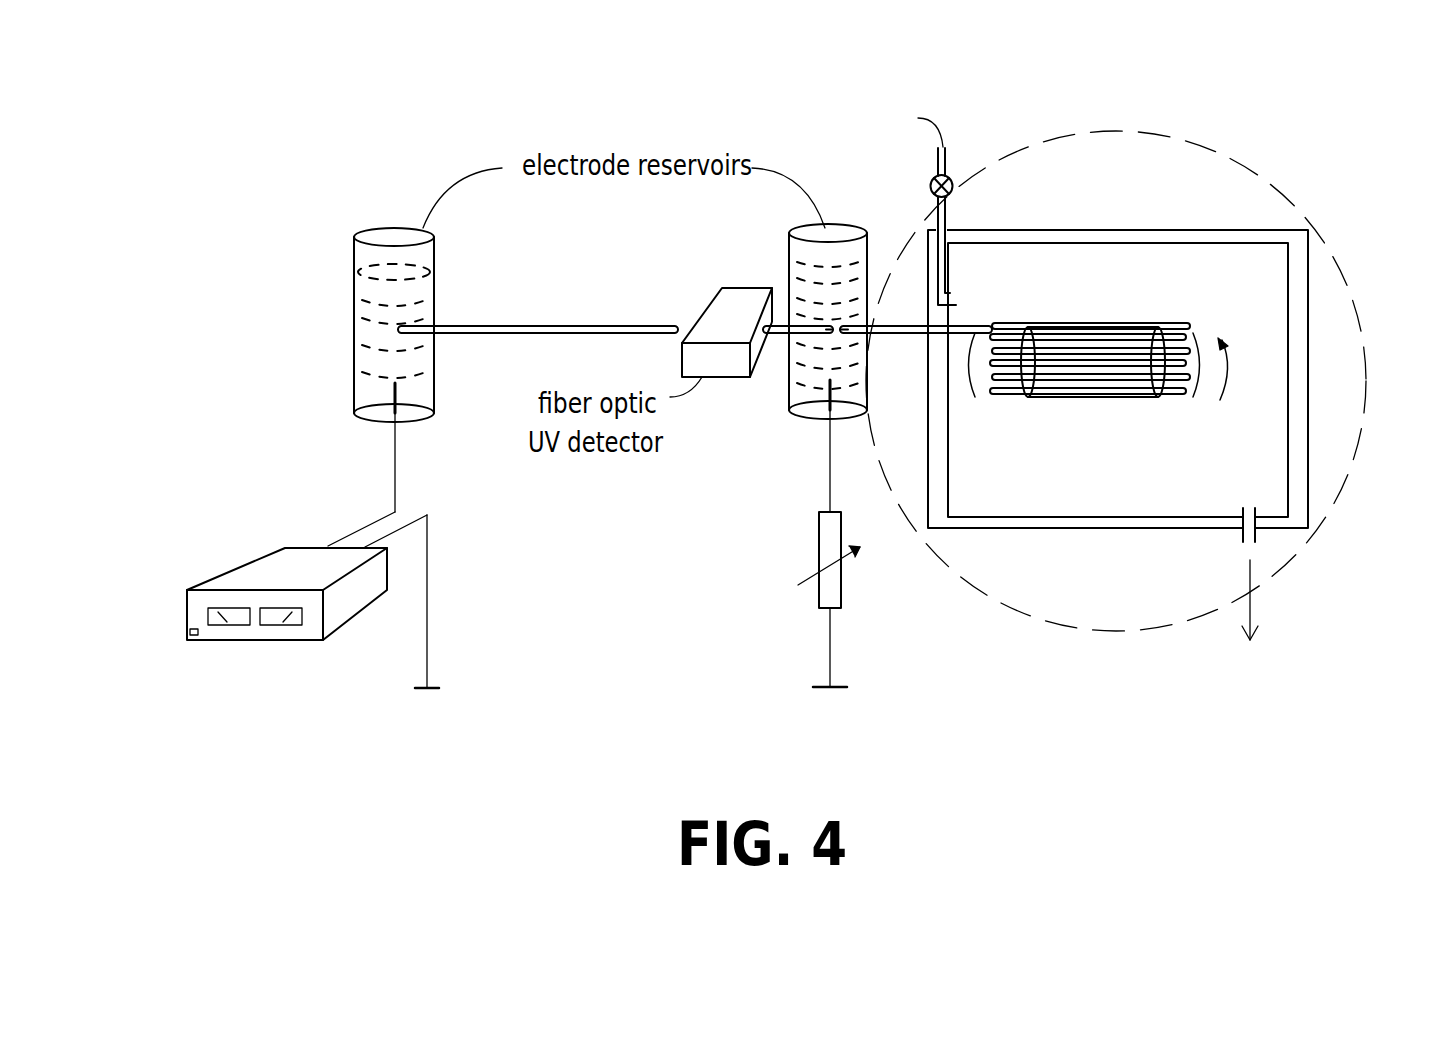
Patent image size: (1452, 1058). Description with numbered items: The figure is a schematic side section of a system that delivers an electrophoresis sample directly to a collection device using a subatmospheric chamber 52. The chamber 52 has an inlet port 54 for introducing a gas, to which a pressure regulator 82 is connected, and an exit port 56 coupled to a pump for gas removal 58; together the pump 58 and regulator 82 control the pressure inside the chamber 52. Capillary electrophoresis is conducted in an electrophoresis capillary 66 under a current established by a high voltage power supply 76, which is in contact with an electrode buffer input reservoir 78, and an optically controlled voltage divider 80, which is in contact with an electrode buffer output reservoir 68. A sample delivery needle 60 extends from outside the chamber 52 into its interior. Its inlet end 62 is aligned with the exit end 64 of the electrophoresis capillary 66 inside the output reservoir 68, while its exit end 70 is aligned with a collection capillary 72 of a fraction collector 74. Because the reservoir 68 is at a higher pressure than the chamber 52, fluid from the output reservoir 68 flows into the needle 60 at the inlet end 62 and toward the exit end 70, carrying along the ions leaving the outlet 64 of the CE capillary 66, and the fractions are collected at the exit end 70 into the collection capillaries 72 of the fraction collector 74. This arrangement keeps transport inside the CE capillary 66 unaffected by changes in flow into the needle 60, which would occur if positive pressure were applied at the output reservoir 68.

The subatmospheric chamber 52 is at (1112, 640).
The inlet port 54 is at (958, 302).
The exit port 56 is at (1255, 507).
The pump for gas removal 58 is at (1340, 637).
The sample delivery needle 60 is at (908, 330).
The inlet end of sample delivery needle 62 is at (843, 317).
The exit end of electrophoresis capillary 64 is at (830, 317).
The electrophoresis capillary 66 is at (615, 309).
The electrode buffer output reservoir 68 is at (787, 387).
The exit end of sample delivery needle 70 is at (983, 382).
The collection capillary 72 is at (1199, 382).
The fraction collector 74 is at (1120, 355).
The high voltage power supply 76 is at (295, 642).
The electrode buffer input reservoir 78 is at (355, 327).
The optically controlled voltage divider 80 is at (819, 542).
The pressure regulator 82 is at (997, 88).